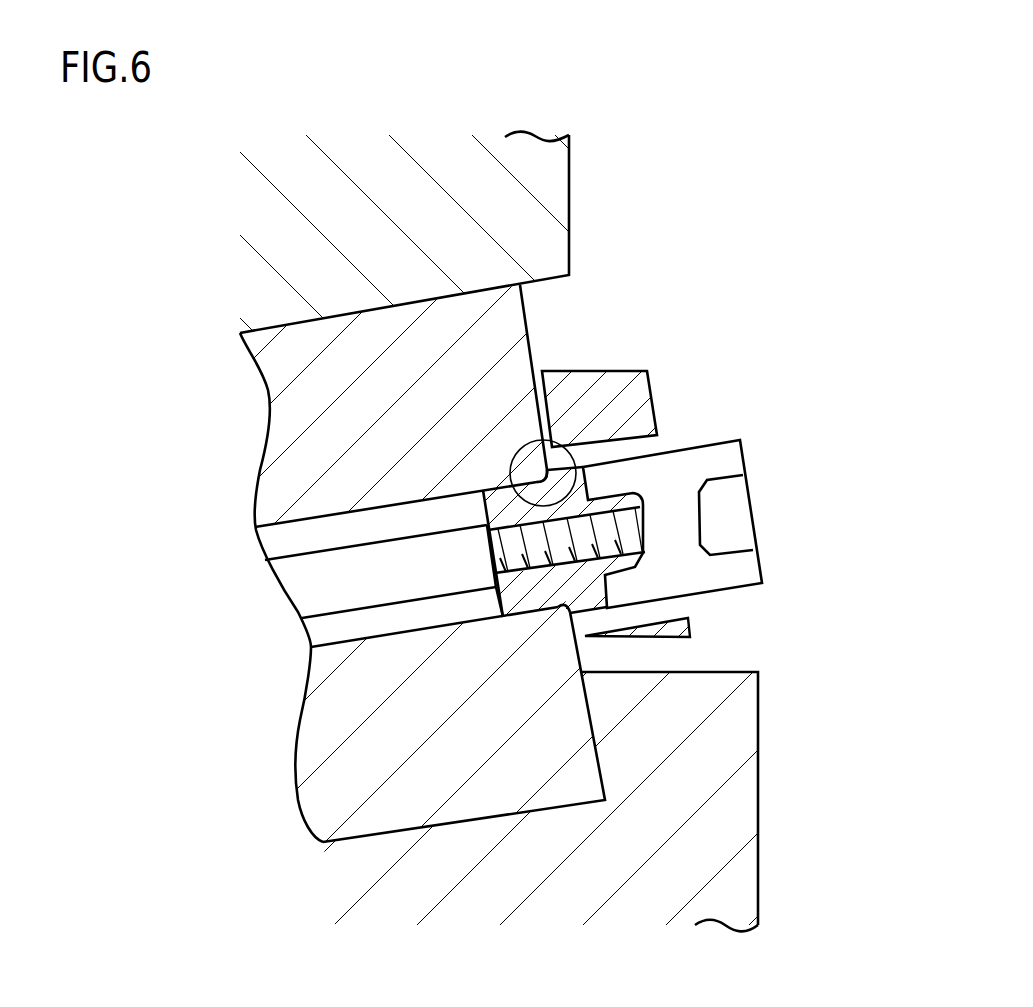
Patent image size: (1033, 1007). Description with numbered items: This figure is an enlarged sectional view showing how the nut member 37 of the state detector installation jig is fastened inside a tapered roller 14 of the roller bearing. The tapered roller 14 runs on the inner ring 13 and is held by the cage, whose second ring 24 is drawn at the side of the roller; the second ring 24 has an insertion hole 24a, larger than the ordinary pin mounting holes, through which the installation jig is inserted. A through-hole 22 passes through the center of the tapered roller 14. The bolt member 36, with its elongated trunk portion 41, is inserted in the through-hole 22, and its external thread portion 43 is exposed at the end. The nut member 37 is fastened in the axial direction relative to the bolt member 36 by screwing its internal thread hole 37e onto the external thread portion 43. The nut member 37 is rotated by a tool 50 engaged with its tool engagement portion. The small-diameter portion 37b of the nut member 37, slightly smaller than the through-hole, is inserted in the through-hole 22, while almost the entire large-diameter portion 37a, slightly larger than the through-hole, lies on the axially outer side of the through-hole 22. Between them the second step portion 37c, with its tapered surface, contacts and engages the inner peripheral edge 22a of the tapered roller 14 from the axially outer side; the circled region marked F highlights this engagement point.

The inner ring 13 is at (635, 848).
The tapered roller 14 is at (455, 808).
The through-hole 22 is at (319, 646).
The inner peripheral edge 22a is at (546, 481).
The second ring 24 is at (637, 371).
The insertion hole 24a is at (673, 617).
The bolt member 36 is at (290, 534).
The nut member 37 is at (583, 466).
The large-diameter portion 37a is at (592, 613).
The small-diameter portion 37b is at (509, 617).
The second step portion 37c is at (561, 617).
The internal thread hole 37e is at (622, 542).
The trunk portion 41 is at (307, 583).
The external thread portion 43 is at (493, 557).
The tool 50 is at (718, 443).
The contact point F is at (527, 442).